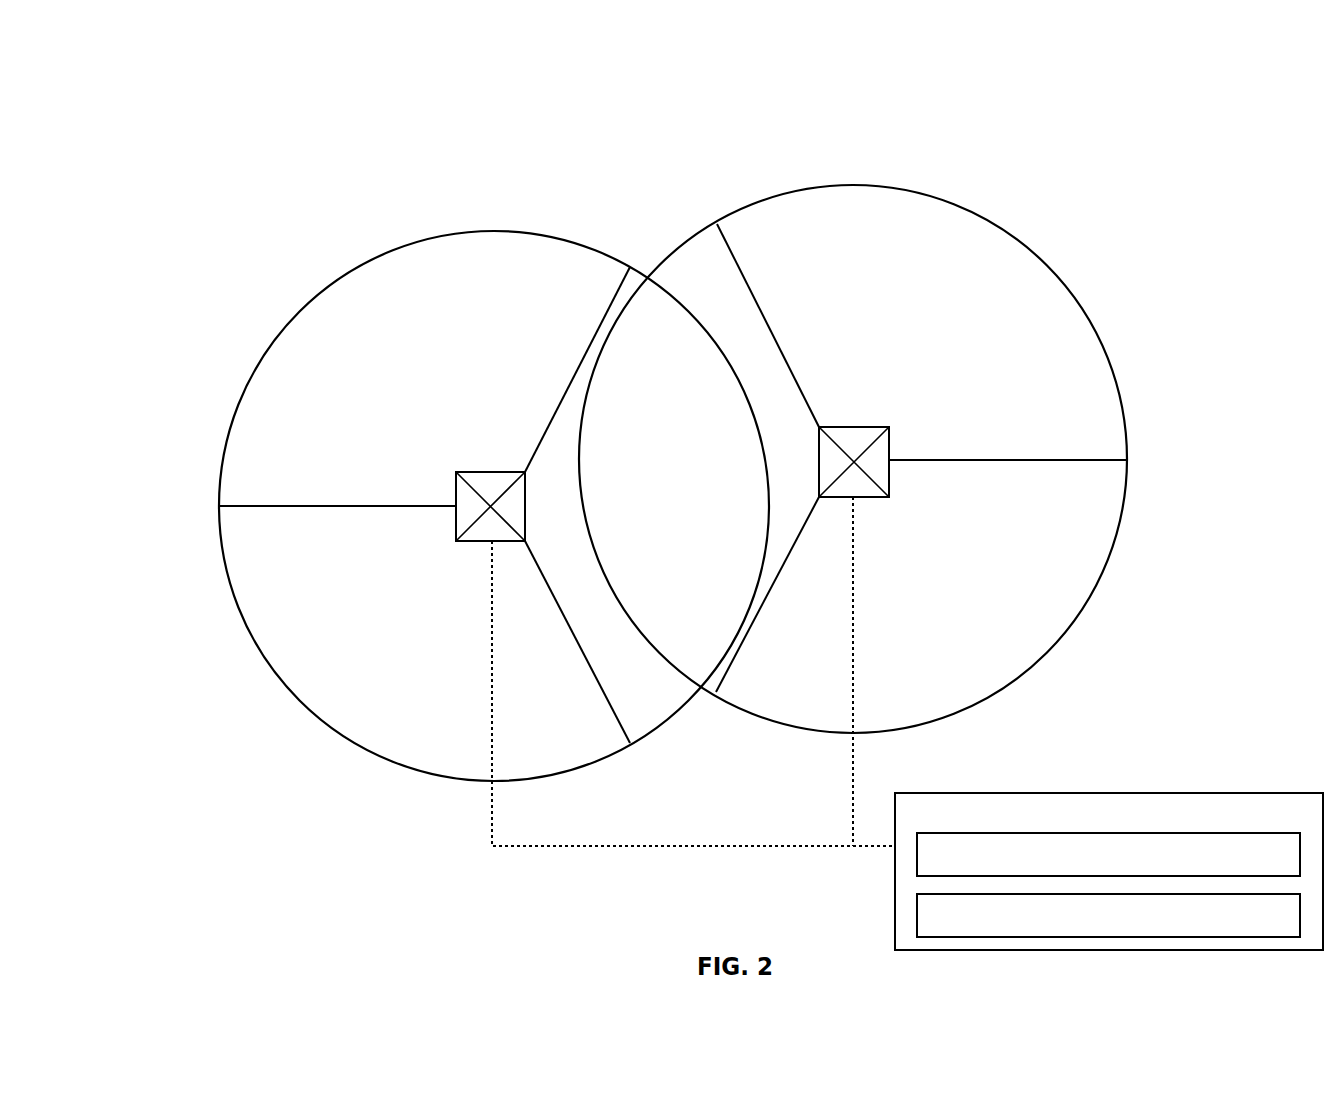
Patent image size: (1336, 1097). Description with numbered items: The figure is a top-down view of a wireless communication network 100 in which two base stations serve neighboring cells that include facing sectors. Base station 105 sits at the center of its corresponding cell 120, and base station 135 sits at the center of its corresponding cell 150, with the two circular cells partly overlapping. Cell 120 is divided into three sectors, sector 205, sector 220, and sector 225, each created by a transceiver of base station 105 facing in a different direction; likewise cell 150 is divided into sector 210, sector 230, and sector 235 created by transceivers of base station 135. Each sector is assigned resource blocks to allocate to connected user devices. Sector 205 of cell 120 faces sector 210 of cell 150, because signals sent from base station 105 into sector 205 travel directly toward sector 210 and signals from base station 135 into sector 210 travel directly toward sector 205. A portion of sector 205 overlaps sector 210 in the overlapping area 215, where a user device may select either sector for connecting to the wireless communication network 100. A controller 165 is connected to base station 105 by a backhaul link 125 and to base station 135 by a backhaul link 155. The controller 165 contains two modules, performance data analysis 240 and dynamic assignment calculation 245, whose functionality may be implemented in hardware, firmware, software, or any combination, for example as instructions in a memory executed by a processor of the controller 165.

The wireless communication network 100 is at (462, 84).
The cell 120 is at (470, 234).
The cell 150 is at (915, 189).
The base station 105 is at (470, 471).
The base station 135 is at (871, 428).
The backhaul link 125 is at (491, 835).
The backhaul link 155 is at (858, 801).
The controller 165 is at (1183, 796).
The performance data analysis 240 is at (1108, 854).
The dynamic assignment calculation 245 is at (1108, 915).
The sector 205 is at (577, 409).
The sector 220 is at (436, 632).
The sector 225 is at (337, 487).
The overlapping area 215 is at (659, 333).
The sector 210 is at (768, 325).
The sector 230 is at (907, 585).
The sector 235 is at (1008, 443).